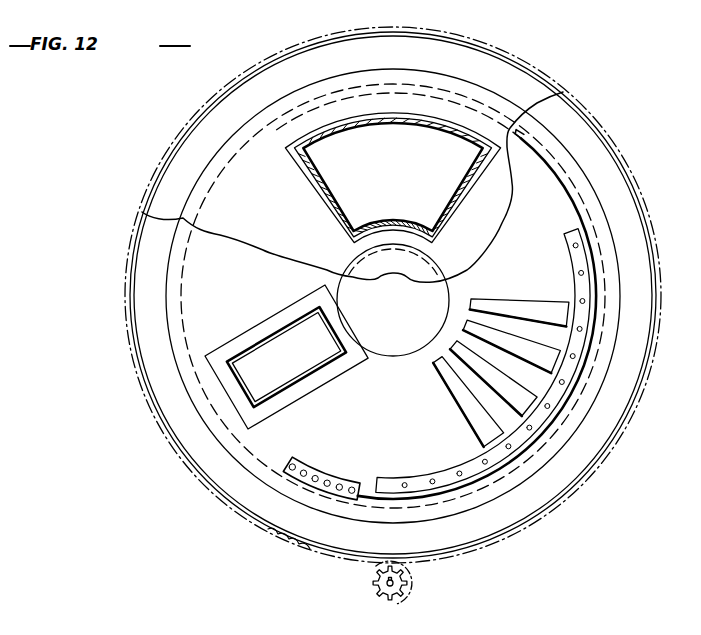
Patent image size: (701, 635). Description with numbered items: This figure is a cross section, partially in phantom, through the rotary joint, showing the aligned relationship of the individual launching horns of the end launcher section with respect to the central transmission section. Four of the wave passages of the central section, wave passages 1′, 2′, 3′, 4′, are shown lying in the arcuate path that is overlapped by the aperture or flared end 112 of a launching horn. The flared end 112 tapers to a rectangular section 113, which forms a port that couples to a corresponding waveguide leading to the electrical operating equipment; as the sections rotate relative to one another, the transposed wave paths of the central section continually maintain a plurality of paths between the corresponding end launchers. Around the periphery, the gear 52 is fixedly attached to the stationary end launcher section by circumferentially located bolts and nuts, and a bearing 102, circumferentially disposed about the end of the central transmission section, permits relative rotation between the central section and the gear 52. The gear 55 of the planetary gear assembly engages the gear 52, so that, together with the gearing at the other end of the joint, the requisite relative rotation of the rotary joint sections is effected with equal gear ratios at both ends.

The flared end 112 is at (409, 169).
The rectangular section 113 is at (300, 366).
The wave passage 1′ is at (468, 402).
The wave passage 2′ is at (493, 378).
The wave passage 3′ is at (511, 346).
The wave passage 4′ is at (519, 312).
The bearing 102 is at (316, 473).
The gear 52 is at (308, 549).
The gear 55 is at (376, 599).